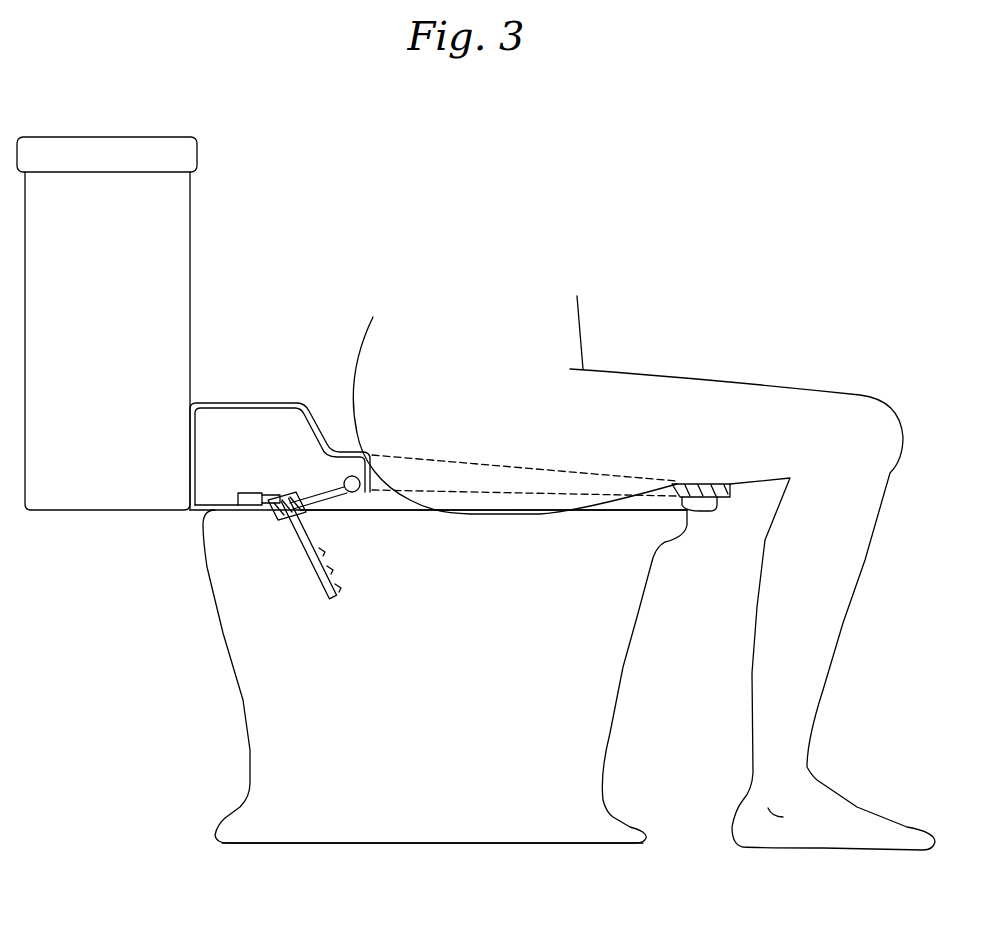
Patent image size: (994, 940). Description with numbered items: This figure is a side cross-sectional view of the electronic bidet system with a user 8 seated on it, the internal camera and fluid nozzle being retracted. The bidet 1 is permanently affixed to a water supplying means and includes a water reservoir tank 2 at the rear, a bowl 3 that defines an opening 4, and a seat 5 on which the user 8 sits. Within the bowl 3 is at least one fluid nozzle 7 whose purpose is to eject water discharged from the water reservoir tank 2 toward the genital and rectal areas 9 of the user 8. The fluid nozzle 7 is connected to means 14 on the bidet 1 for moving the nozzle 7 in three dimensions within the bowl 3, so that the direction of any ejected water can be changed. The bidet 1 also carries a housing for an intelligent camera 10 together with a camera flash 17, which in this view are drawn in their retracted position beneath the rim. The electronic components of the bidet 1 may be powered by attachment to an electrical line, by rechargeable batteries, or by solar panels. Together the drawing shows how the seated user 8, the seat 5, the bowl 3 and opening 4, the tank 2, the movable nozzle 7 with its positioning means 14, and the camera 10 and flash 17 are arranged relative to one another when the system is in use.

The bidet 1 is at (318, 797).
The water reservoir tank 2 is at (113, 205).
The bowl 3 is at (540, 790).
The opening 4 is at (585, 517).
The seat 5 is at (480, 468).
The fluid nozzle 7 is at (338, 592).
The user 8 is at (723, 385).
The genital and rectal areas 9 is at (483, 538).
The intelligent camera 10 is at (332, 572).
The means for moving the nozzle 14 is at (253, 500).
The camera flash 17 is at (310, 548).